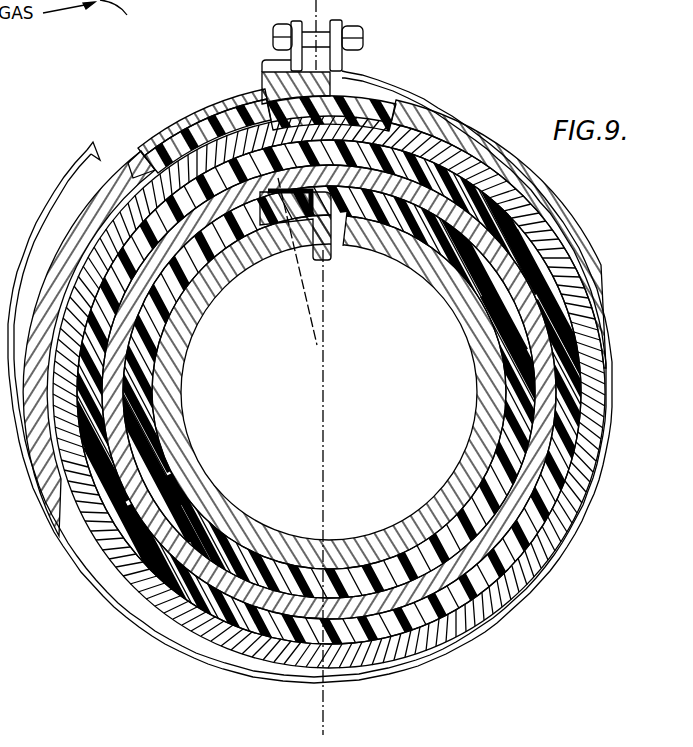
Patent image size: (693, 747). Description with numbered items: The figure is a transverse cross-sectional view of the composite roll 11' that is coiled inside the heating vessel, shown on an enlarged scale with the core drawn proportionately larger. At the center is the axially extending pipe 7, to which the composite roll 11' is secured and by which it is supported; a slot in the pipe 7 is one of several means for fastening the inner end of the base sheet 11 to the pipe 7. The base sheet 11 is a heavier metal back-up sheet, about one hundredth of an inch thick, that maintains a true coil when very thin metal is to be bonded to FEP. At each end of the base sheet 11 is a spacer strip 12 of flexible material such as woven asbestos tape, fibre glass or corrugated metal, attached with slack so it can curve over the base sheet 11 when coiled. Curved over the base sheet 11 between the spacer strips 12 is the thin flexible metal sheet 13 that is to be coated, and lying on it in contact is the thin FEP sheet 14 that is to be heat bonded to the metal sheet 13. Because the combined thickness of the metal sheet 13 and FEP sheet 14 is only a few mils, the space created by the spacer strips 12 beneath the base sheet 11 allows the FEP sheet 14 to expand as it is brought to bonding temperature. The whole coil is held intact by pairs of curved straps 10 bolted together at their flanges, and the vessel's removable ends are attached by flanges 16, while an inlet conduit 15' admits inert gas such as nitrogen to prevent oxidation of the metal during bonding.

The pipe 7 is at (455, 305).
The curved straps 10 is at (396, 90).
The base sheet 11 is at (329, 384).
The composite roll 11' is at (329, 392).
The spacer strip 12 is at (123, 182).
The metal sheet 13 is at (238, 112).
The FEP sheet 14 is at (197, 110).
The inlet conduit 15' is at (126, 13).
The flanges 16 is at (334, 258).